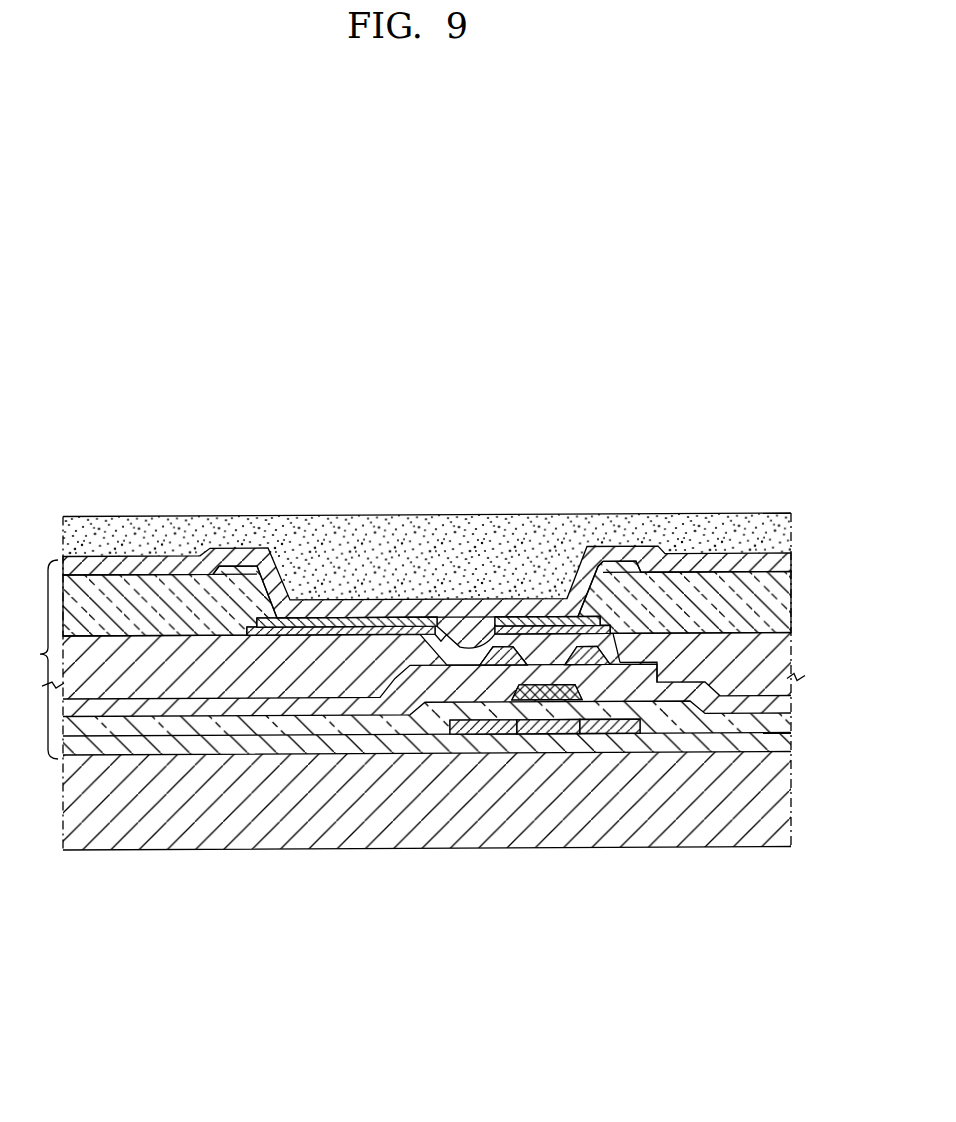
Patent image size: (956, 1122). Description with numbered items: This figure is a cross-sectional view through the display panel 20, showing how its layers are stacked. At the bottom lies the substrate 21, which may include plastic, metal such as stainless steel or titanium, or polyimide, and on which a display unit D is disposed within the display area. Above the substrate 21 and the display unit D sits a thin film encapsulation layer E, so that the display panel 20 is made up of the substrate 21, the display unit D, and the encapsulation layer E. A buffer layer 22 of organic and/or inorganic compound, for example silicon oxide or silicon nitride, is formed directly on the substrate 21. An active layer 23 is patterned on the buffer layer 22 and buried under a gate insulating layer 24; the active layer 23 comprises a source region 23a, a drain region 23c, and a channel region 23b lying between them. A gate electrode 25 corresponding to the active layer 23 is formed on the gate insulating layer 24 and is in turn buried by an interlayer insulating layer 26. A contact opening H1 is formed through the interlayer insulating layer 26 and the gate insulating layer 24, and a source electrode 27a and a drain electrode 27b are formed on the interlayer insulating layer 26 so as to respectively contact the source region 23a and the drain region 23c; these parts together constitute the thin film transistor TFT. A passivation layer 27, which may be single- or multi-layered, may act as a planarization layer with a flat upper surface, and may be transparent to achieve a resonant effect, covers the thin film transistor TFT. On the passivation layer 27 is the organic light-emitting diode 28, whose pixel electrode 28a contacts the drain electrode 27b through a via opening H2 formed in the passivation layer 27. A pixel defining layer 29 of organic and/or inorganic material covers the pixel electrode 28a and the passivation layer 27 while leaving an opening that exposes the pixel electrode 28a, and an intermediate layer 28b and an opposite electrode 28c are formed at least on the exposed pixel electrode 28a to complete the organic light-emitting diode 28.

The display panel 20 is at (781, 372).
The substrate 21 is at (788, 812).
The buffer layer 22 is at (788, 745).
The active layer 23 is at (545, 829).
The source region 23a is at (606, 736).
The channel region 23b is at (546, 736).
The drain region 23c is at (481, 736).
The gate insulating layer 24 is at (788, 722).
The gate electrode 25 is at (552, 684).
The interlayer insulating layer 26 is at (788, 703).
The passivation layer 27 is at (788, 664).
The source electrode 27a is at (589, 646).
The drain electrode 27b is at (508, 647).
The organic light-emitting diode 28 is at (427, 505).
The pixel electrode 28a is at (319, 630).
The intermediate layer 28b is at (378, 622).
The opposite electrode 28c is at (434, 612).
The pixel defining layer 29 is at (788, 592).
The thin film encapsulation layer E is at (788, 534).
The display unit D is at (35, 659).
The contact opening H1 is at (645, 660).
The via opening H2 is at (478, 645).
The thin film transistor TFT is at (610, 546).